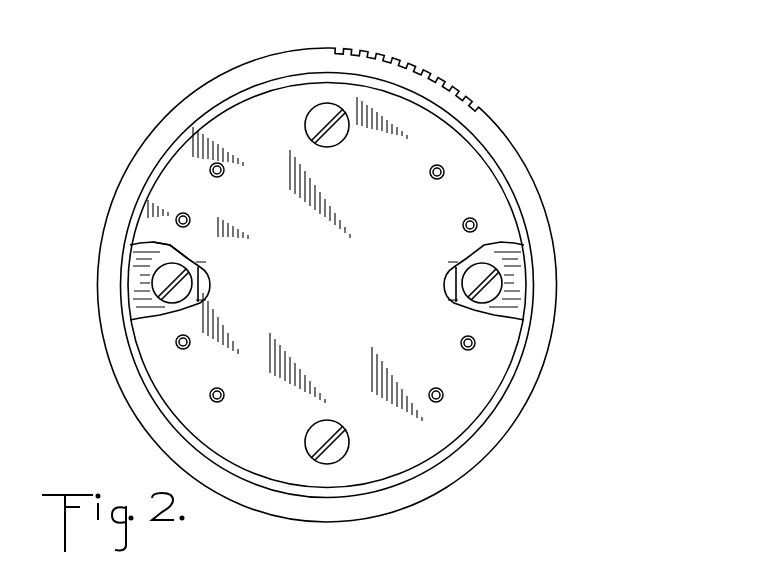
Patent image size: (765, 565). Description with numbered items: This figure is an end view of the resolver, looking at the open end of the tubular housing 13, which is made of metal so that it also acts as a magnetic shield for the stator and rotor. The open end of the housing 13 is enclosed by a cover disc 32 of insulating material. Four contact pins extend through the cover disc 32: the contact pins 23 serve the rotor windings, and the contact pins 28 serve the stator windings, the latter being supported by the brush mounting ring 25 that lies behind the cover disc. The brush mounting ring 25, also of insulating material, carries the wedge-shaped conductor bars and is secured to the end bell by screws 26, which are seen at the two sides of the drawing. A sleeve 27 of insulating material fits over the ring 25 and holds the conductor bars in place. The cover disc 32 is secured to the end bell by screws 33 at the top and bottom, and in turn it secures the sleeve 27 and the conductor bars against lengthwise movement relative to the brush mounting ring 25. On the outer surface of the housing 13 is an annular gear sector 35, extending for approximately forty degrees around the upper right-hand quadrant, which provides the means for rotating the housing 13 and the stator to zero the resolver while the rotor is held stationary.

The housing 13 is at (533, 287).
The contact pins 23 is at (211, 168).
The brush mounting ring 25 is at (155, 309).
The screws 26 is at (153, 281).
The sleeve 27 is at (157, 250).
The contact pins 28 is at (176, 220).
The cover disc 32 is at (503, 348).
The screws 33 is at (326, 110).
The gear sector 35 is at (236, 76).